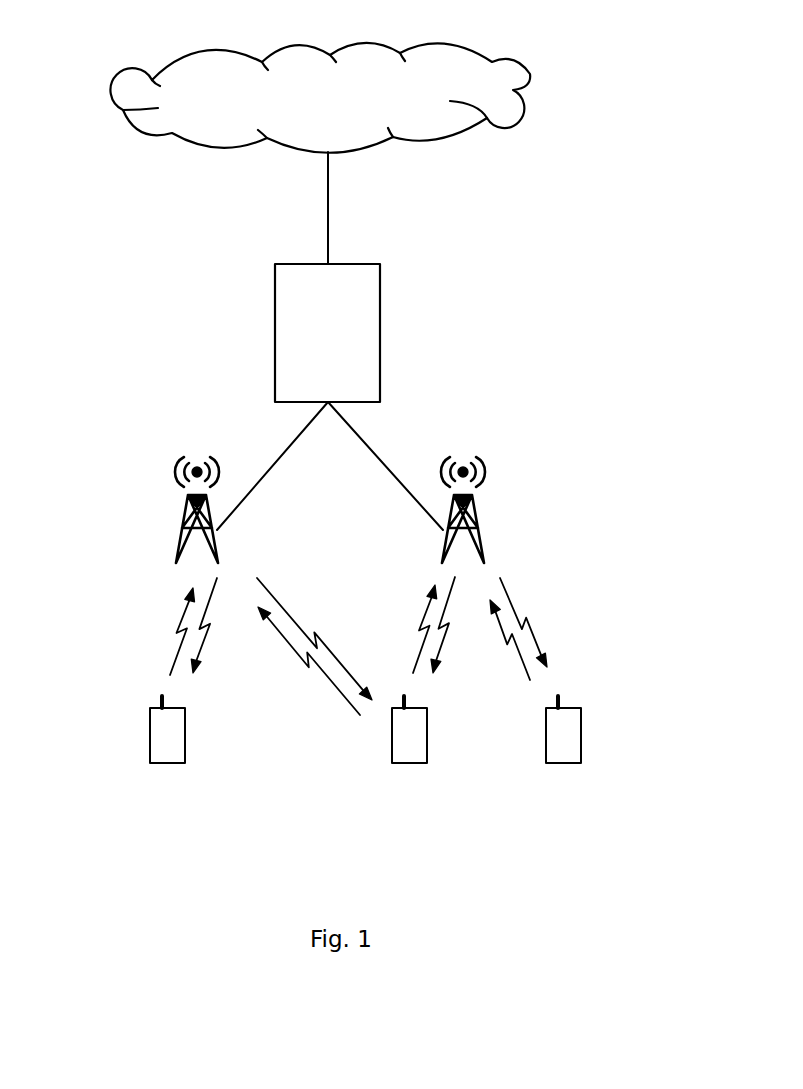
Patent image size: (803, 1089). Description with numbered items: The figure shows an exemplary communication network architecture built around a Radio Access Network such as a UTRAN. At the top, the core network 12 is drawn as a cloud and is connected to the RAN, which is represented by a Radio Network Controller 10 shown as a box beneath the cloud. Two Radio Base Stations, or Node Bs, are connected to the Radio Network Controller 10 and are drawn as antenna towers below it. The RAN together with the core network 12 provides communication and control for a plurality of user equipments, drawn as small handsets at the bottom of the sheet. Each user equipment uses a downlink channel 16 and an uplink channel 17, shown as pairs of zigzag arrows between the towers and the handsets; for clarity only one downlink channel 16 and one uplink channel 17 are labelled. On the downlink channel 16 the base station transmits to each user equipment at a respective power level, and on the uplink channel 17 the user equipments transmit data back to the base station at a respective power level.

The Radio Network Controller 10 is at (380, 322).
The Core network 12 is at (533, 88).
The downlink channel 16 is at (265, 580).
The uplink channel 17 is at (179, 626).